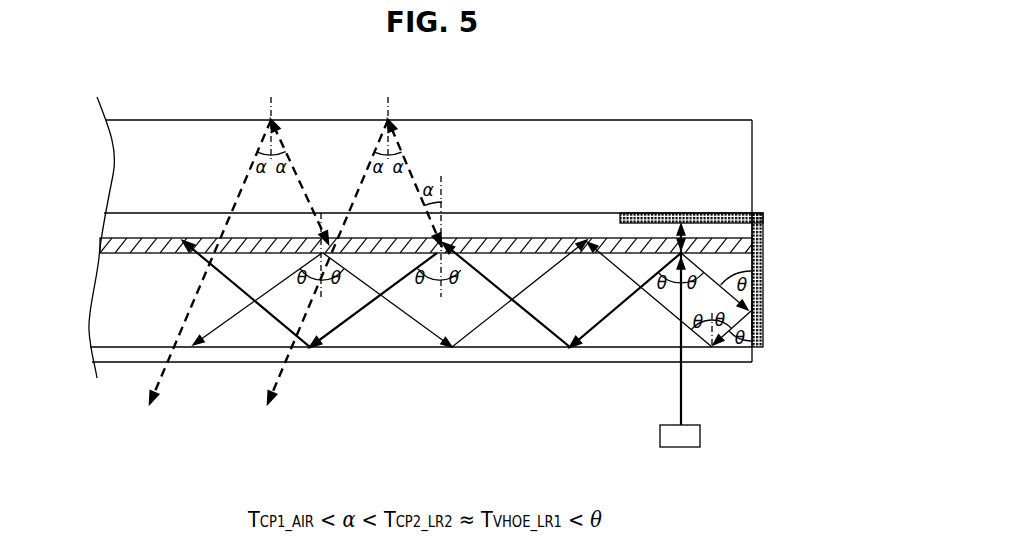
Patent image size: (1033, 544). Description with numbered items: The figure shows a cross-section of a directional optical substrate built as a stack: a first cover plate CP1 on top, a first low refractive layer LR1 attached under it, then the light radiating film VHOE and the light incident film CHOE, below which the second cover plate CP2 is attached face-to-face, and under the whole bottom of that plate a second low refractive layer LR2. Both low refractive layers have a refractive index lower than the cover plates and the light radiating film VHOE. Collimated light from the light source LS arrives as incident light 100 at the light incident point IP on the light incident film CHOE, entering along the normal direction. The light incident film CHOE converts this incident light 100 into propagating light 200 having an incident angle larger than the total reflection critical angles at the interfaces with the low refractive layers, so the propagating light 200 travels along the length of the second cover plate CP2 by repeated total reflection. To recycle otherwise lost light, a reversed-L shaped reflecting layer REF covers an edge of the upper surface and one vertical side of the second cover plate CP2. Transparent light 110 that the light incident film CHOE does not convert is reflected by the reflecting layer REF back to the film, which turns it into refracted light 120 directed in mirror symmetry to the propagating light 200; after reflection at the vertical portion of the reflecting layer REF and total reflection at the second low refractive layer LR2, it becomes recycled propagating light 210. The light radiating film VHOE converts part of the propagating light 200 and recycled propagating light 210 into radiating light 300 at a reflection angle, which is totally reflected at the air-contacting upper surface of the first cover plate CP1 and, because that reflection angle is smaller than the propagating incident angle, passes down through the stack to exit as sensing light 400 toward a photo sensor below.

The incident light 100 is at (683, 400).
The transparent light 110 is at (684, 232).
The refracted light 120 is at (750, 284).
The propagating light 200 is at (342, 324).
The recycled propagating light 210 is at (418, 324).
The radiating light 300 is at (298, 178).
The sensing light 400 is at (167, 380).
The light source LS is at (700, 440).
The light incident point IP is at (678, 256).
The reflecting layer REF is at (763, 293).
The light incident film CHOE is at (753, 244).
The light radiating film VHOE is at (100, 244).
The first cover plate CP1 is at (117, 165).
The second cover plate CP2 is at (98, 298).
The first low refractive layer LR1 is at (112, 222).
The second low refractive layer LR2 is at (96, 356).